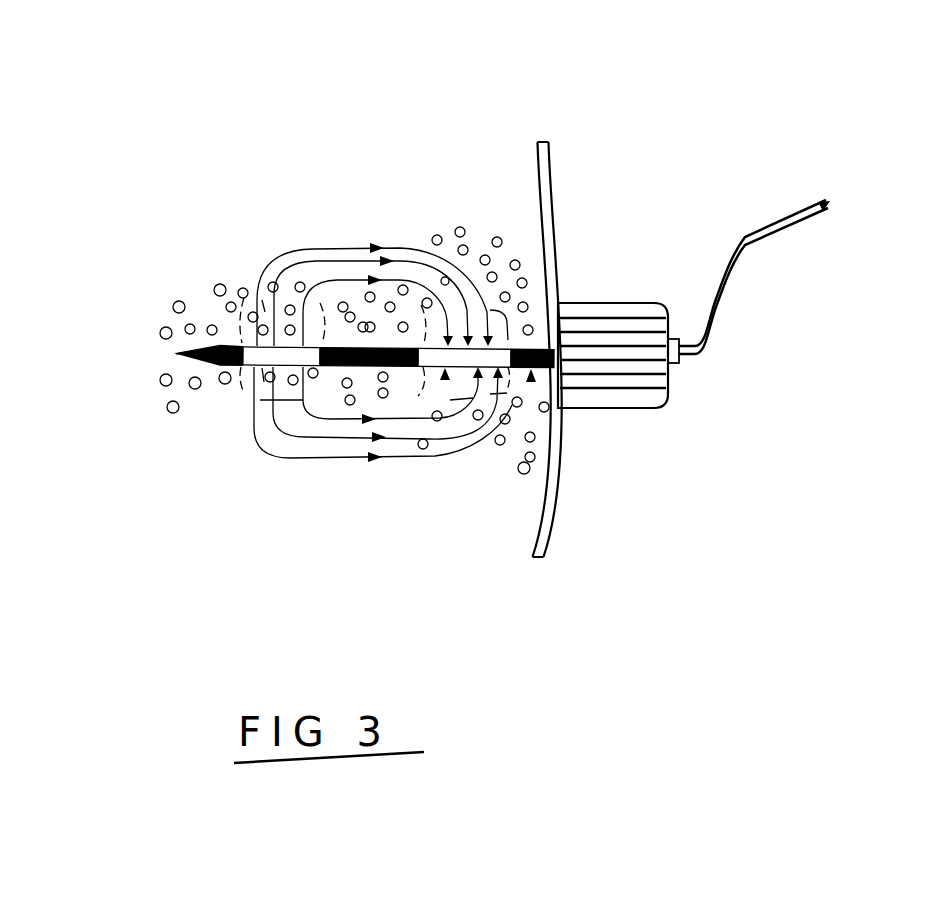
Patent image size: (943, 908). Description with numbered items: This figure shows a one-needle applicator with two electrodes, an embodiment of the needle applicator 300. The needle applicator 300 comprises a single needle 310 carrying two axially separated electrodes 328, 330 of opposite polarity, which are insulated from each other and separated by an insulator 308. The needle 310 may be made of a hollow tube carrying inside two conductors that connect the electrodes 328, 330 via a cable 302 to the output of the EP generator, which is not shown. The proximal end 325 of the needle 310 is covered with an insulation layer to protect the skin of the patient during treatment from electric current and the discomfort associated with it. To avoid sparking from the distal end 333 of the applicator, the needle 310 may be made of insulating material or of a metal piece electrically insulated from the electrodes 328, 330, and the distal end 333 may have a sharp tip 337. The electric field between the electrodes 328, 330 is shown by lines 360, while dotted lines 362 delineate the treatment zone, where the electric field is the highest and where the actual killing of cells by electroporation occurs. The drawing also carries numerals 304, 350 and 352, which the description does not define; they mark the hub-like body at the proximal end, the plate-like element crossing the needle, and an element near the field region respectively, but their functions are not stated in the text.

The needle applicator 300 is at (390, 122).
The cable 302 is at (749, 227).
The connector 304 is at (600, 303).
The insulator 308 is at (381, 346).
The needle 310 is at (420, 243).
The proximal end 325 is at (531, 378).
The electrode 328 is at (254, 378).
The electrode 330 is at (446, 380).
The distal end 333 is at (225, 338).
The sharp tip 337 is at (182, 354).
The plate 350 is at (553, 170).
The inner flow loop 352 is at (479, 258).
The electric field lines 360 is at (312, 253).
The dotted lines 362 is at (418, 397).